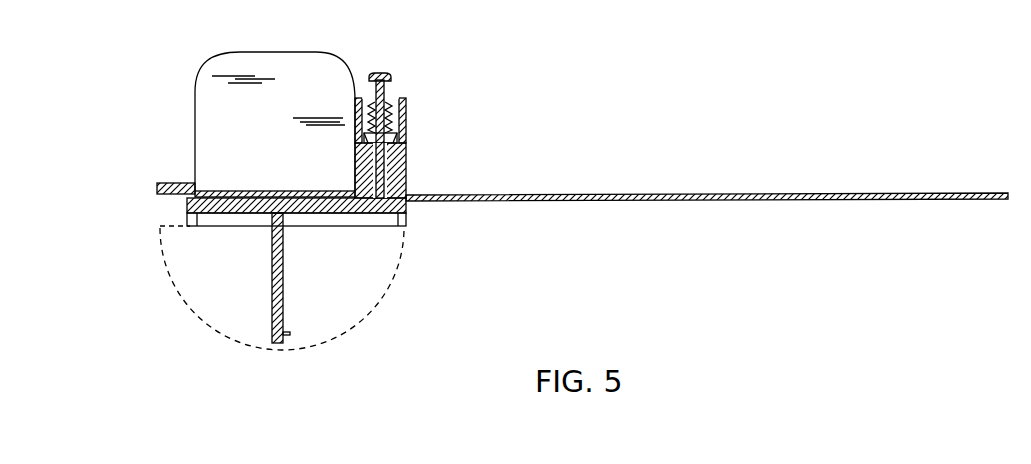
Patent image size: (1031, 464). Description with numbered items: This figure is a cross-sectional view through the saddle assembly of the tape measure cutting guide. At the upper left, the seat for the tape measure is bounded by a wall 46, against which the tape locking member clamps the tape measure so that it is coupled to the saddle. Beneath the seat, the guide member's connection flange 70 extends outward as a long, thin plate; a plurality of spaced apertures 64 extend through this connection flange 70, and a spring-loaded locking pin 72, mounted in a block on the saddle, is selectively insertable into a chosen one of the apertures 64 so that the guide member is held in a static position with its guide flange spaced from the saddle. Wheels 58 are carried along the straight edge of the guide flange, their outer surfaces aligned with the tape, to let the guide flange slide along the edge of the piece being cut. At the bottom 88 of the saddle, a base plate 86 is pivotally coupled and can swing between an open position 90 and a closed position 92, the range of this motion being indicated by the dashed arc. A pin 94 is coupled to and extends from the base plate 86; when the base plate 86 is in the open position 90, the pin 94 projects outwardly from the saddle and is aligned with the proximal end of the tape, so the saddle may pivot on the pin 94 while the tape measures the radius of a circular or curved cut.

The wall 46 is at (330, 70).
The wheels 58 is at (187, 208).
The apertures 64 is at (408, 200).
The connection flange 70 is at (518, 195).
The spring-loaded locking pin 72 is at (392, 84).
The base plate 86 is at (272, 318).
The bottom 88 is at (313, 227).
The open position 90 is at (158, 232).
The closed position 92 is at (373, 231).
The pin 94 is at (284, 335).